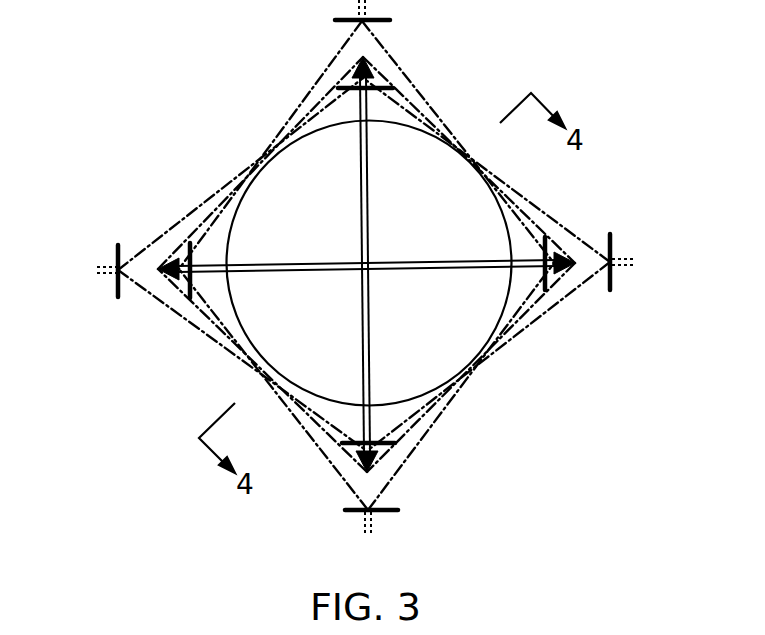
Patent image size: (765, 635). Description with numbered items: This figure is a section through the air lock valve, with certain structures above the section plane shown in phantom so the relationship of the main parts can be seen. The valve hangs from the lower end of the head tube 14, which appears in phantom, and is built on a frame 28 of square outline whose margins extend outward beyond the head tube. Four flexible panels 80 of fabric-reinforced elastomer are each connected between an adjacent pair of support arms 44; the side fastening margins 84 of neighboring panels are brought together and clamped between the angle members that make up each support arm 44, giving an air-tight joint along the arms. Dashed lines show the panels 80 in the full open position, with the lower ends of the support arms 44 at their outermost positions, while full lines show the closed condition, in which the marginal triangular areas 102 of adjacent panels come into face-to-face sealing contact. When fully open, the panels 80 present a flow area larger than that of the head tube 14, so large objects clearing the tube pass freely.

The head tube 14 is at (254, 321).
The frame 28 is at (410, 438).
The support arms 44 is at (100, 279).
The flexible panels 80 is at (310, 80).
The side fastening margins 84 is at (638, 262).
The marginal triangular areas 102 is at (372, 184).